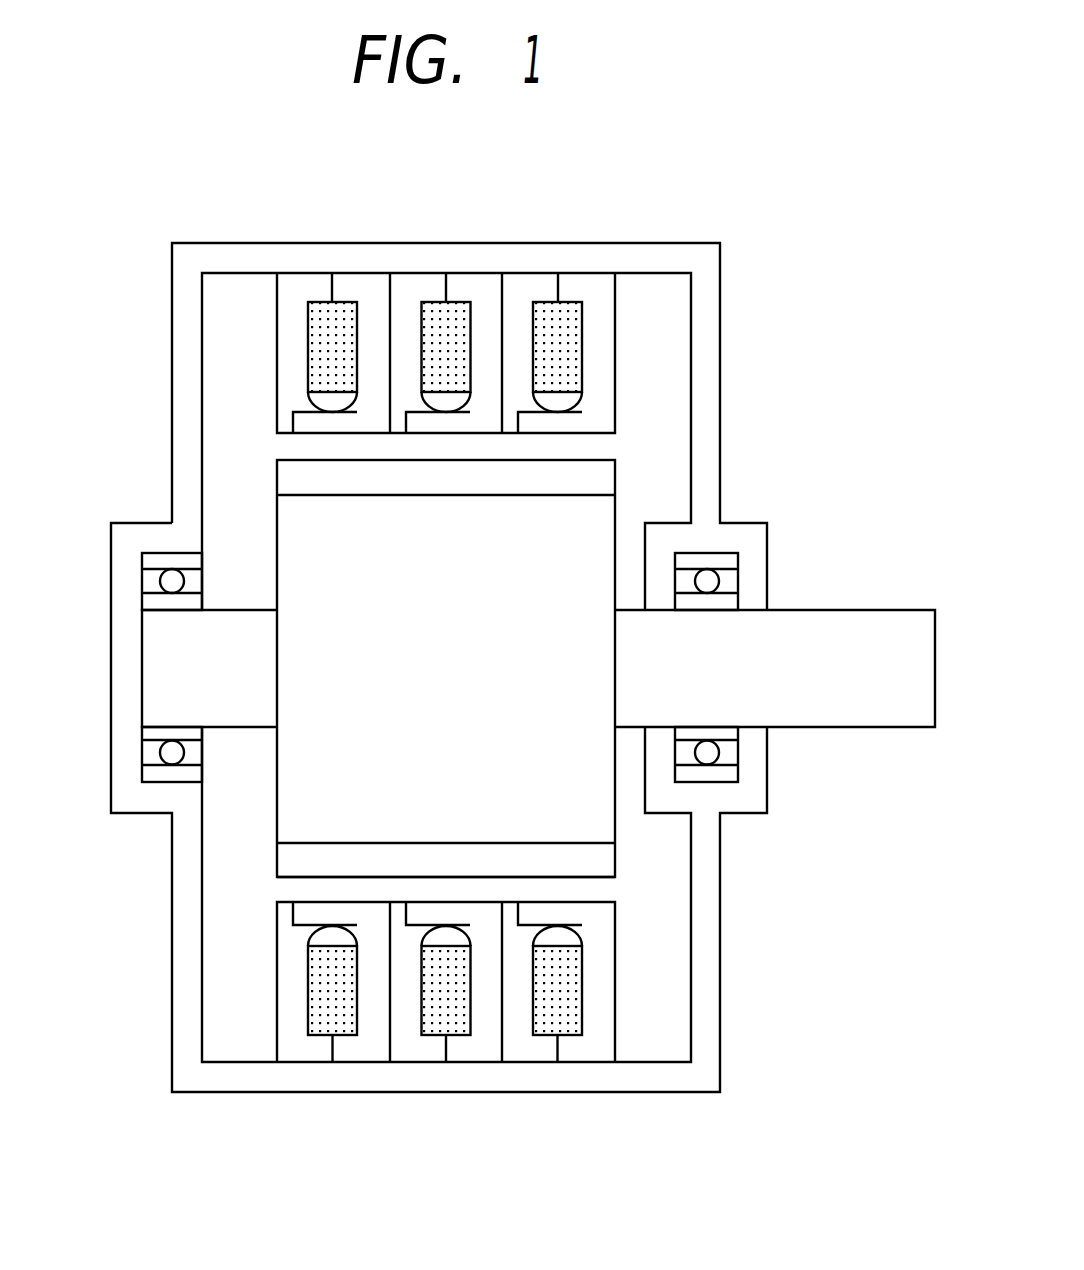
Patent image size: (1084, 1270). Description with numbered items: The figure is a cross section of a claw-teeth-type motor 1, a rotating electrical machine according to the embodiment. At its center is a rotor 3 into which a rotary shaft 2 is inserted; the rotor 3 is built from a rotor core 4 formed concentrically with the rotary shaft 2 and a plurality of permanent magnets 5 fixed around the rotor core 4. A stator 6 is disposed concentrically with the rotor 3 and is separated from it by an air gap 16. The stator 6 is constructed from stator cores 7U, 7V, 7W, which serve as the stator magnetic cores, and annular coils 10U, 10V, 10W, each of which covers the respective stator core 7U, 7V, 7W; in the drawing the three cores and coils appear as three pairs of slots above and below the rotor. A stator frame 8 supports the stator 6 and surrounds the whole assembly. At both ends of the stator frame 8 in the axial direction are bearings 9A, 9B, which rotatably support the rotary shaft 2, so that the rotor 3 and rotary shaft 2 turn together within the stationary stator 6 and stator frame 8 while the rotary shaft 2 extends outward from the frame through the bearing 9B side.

The claw-teeth-type motor 1 is at (741, 224).
The rotary shaft 2 is at (907, 622).
The rotor 3 is at (624, 491).
The rotor core 4 is at (607, 830).
The permanent magnets 5 is at (603, 862).
The stator 6 is at (297, 1046).
The stator core 7W is at (368, 1043).
The stator core 7V is at (483, 1043).
The stator core 7U is at (597, 1043).
The stator frame 8 is at (707, 339).
The bearing 9A is at (172, 582).
The bearing 9B is at (710, 582).
The annular coil 10W is at (323, 300).
The annular coil 10V is at (433, 300).
The annular coil 10U is at (547, 300).
The air gap 16 is at (283, 447).